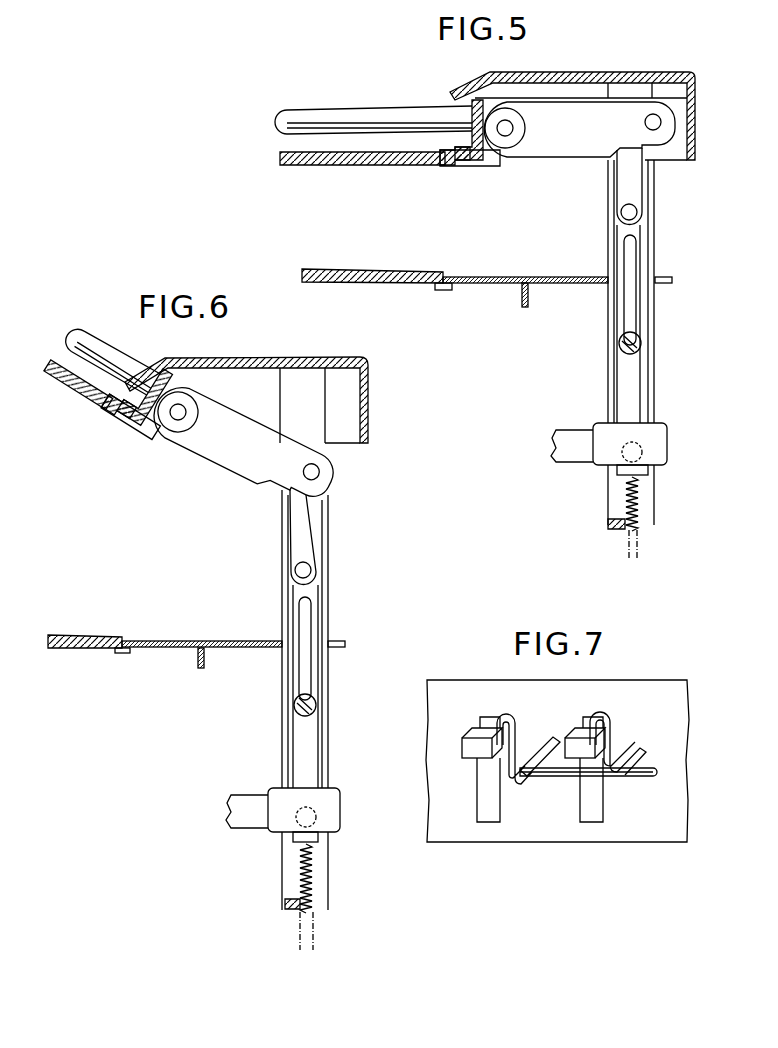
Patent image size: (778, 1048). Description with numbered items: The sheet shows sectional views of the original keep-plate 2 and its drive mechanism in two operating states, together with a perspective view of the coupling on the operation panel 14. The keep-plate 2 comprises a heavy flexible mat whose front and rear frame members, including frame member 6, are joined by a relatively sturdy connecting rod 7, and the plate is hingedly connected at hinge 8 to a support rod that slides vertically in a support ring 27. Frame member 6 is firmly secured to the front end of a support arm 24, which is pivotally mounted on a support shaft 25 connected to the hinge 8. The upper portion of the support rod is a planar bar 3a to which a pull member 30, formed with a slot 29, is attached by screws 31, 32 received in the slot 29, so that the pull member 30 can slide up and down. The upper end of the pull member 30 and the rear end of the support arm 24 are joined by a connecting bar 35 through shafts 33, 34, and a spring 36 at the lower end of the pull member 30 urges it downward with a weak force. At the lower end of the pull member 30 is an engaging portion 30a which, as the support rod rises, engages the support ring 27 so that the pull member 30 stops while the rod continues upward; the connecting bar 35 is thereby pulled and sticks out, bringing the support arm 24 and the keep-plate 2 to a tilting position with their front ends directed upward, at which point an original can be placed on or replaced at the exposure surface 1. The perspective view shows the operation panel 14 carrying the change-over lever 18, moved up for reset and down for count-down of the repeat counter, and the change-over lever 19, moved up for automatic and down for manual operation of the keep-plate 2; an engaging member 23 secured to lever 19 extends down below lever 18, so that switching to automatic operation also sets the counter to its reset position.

In FIG. 5, the exposure surface 1 is at (398, 271).
In FIG. 6, the exposure surface 1 is at (100, 641).
In FIG. 5, the original keep-plate 2 is at (383, 163).
In FIG. 6, the original keep-plate 2 is at (91, 403).
In FIG. 5, the planar bar 3a is at (654, 393).
In FIG. 6, the planar bar 3a is at (287, 858).
In FIG. 5, the frame member 6 is at (447, 160).
In FIG. 5, the connecting rod 7 is at (378, 110).
In FIG. 6, the connecting rod 7 is at (121, 366).
In FIG. 5, the hinge 8 is at (589, 83).
In FIG. 6, the hinge 8 is at (328, 366).
In FIG. 7, the operation panel 14 is at (572, 842).
In FIG. 7, the change-over lever 18 is at (573, 730).
In FIG. 7, the change-over lever 19 is at (469, 732).
In FIG. 7, the engaging member 23 is at (552, 777).
In FIG. 5, the support arm 24 is at (572, 150).
In FIG. 6, the support arm 24 is at (218, 460).
In FIG. 5, the support shaft 25 is at (507, 136).
In FIG. 6, the support shaft 25 is at (178, 421).
In FIG. 5, the support ring 27 is at (665, 438).
In FIG. 6, the support ring 27 is at (343, 782).
In FIG. 5, the slot 29 is at (625, 302).
In FIG. 6, the slot 29 is at (311, 614).
In FIG. 5, the pull member 30 is at (647, 248).
In FIG. 5, the engaging portion 30a is at (650, 476).
In FIG. 5, the screw 31 is at (641, 347).
In FIG. 6, the screw 31 is at (317, 703).
In FIG. 5, the screw 32 is at (620, 457).
In FIG. 5, the shaft 33 is at (627, 212).
In FIG. 6, the shaft 33 is at (311, 570).
In FIG. 5, the shaft 34 is at (661, 122).
In FIG. 6, the shaft 34 is at (319, 476).
In FIG. 5, the connecting bar 35 is at (641, 178).
In FIG. 6, the connecting bar 35 is at (286, 524).
In FIG. 5, the spring 36 is at (633, 526).
In FIG. 6, the spring 36 is at (311, 860).